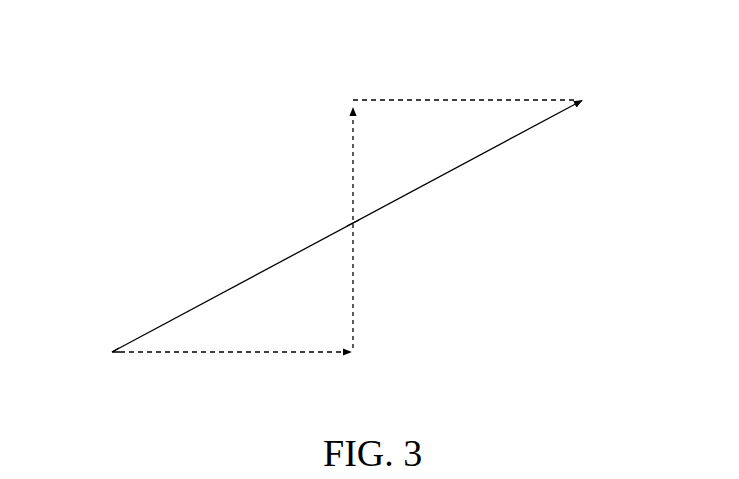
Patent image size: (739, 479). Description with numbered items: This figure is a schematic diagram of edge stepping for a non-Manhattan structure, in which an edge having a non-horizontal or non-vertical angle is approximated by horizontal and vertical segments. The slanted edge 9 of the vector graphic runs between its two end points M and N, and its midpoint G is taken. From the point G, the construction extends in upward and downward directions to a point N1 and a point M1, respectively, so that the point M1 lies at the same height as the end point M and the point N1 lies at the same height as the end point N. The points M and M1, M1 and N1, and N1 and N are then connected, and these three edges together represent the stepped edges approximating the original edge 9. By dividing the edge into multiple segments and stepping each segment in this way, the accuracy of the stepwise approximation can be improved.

The line / optical path from M to N 9 is at (502, 124).
The end point M of edge MN M is at (99, 349).
The point M1 is at (260, 350).
The point N1 is at (330, 205).
The end point N of edge MN N is at (479, 81).
The midpoint G of edge MN G is at (367, 237).